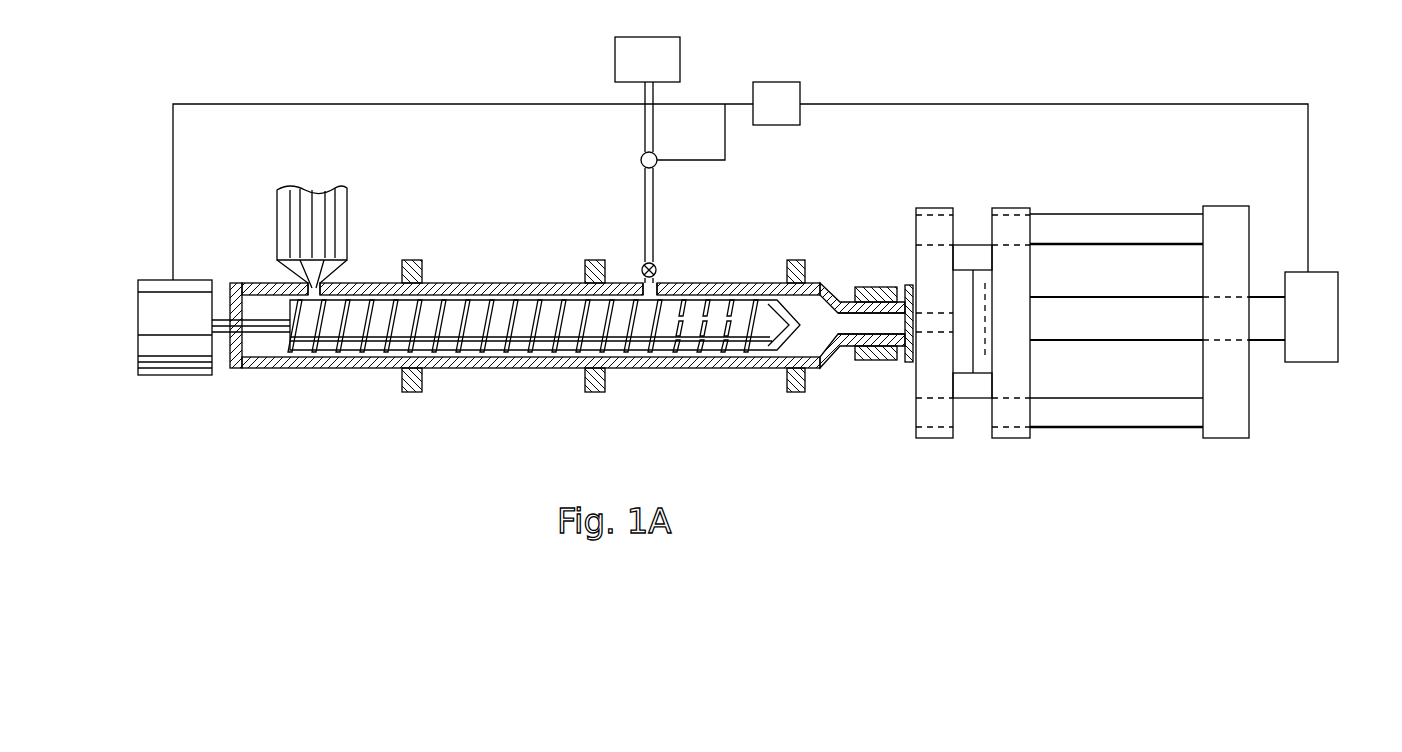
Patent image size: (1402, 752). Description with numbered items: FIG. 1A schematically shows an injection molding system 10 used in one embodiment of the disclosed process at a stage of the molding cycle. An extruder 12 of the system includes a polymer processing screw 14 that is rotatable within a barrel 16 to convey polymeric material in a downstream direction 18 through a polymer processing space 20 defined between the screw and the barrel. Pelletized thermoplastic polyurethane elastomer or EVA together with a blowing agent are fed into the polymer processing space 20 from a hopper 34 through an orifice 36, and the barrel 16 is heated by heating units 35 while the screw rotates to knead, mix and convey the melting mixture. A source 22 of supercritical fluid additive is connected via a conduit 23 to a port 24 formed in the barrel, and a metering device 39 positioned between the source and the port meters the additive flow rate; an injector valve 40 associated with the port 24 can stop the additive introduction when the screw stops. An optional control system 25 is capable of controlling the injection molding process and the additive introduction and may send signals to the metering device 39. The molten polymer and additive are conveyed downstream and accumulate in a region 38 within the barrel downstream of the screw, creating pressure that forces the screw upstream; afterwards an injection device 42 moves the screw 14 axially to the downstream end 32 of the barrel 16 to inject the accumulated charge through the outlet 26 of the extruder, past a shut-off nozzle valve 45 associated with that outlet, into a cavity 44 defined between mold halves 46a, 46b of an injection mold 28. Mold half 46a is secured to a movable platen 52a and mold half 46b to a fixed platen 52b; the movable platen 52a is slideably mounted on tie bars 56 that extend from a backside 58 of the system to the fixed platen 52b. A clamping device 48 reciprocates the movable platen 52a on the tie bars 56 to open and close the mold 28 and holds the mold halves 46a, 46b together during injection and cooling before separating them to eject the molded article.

The injection molding system 10 is at (505, 98).
The extruder 12 is at (525, 338).
The polymer processing screw 14 is at (544, 291).
The barrel 16 is at (343, 370).
The downstream direction 18 is at (632, 427).
The polymer processing space 20 is at (466, 297).
The source of supercritical fluid additive 22 is at (614, 55).
The conduit 23 is at (644, 185).
The port 24 is at (660, 284).
The control system 25 is at (777, 82).
The outlet 26 is at (862, 334).
The injection mold 28 is at (995, 342).
The downstream end 32 is at (1108, 339).
The hopper 34 is at (305, 190).
The heating units 35 is at (412, 259).
The orifice 36 is at (280, 250).
The region 38 is at (830, 300).
The metering device 39 is at (657, 158).
The injector valve 40 is at (657, 266).
The injection device 42 is at (183, 376).
The cavity 44 is at (985, 288).
The shut-off nozzle valve 45 is at (908, 284).
The mold half 46a is at (983, 268).
The mold half 46b is at (965, 375).
The clamping device 48 is at (1291, 363).
The movable platen 52a is at (1010, 207).
The fixed platen 52b is at (928, 207).
The tie bars 56 is at (1108, 213).
The backside 58 is at (1202, 282).